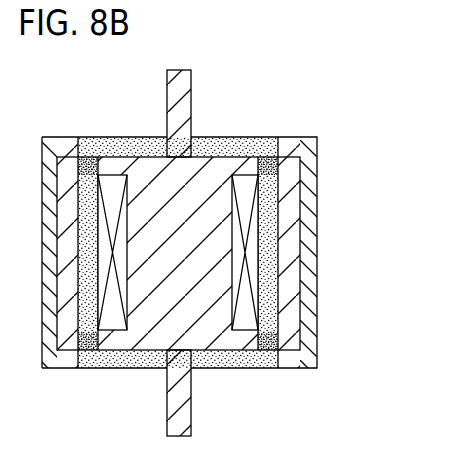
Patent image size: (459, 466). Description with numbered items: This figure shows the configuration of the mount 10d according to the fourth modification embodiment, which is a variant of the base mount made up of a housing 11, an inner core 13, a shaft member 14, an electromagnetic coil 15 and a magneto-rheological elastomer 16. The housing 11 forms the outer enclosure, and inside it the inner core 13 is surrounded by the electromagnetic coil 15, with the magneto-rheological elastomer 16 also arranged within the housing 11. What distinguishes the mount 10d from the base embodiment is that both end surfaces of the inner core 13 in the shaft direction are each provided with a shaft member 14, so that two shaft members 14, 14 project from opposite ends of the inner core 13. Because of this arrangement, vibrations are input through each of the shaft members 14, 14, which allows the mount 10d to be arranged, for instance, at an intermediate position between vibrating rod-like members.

The mount 10d is at (285, 88).
The housing 11 is at (305, 312).
The inner core 13 is at (220, 223).
The shaft member 14 is at (191, 85).
The electromagnetic coil 15 is at (248, 249).
The magneto-rheological elastomer 16 is at (245, 149).